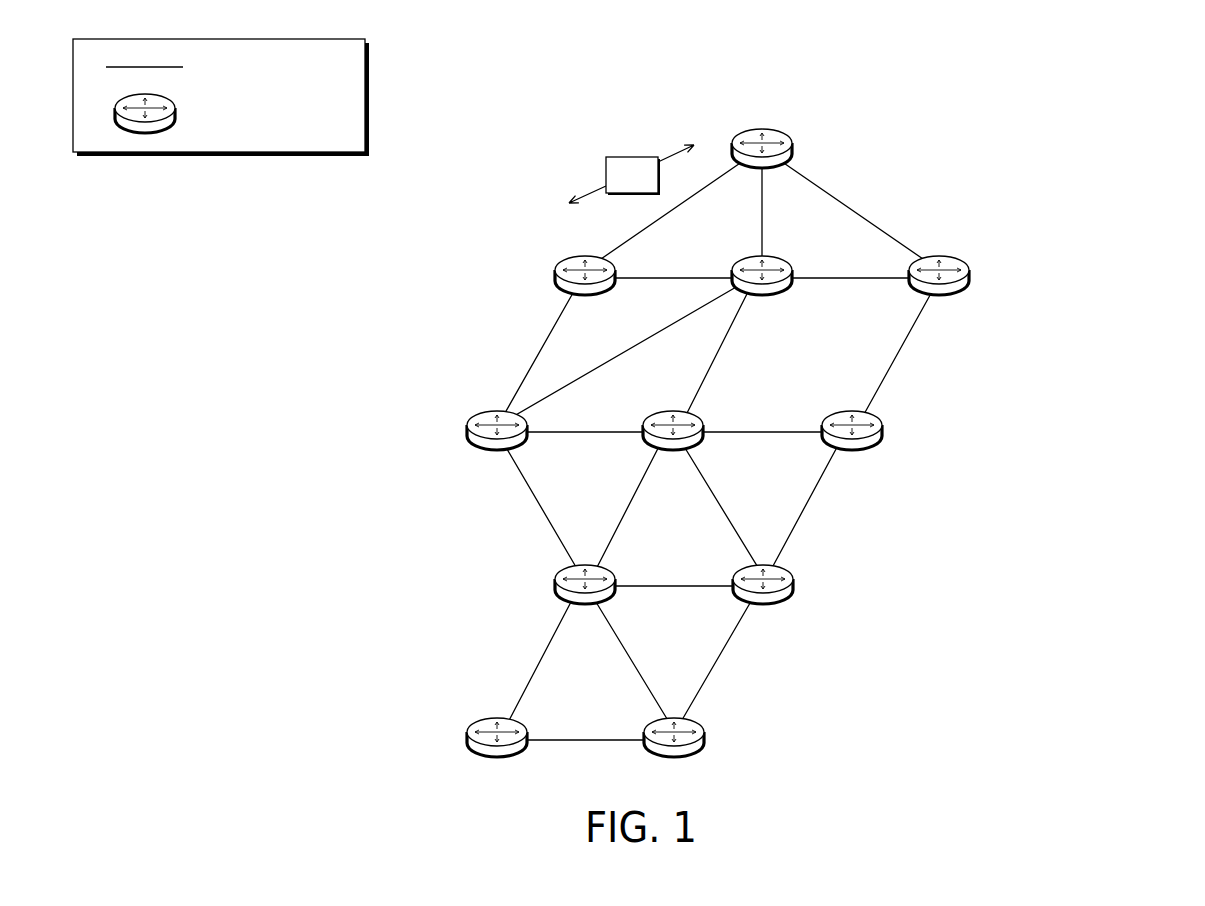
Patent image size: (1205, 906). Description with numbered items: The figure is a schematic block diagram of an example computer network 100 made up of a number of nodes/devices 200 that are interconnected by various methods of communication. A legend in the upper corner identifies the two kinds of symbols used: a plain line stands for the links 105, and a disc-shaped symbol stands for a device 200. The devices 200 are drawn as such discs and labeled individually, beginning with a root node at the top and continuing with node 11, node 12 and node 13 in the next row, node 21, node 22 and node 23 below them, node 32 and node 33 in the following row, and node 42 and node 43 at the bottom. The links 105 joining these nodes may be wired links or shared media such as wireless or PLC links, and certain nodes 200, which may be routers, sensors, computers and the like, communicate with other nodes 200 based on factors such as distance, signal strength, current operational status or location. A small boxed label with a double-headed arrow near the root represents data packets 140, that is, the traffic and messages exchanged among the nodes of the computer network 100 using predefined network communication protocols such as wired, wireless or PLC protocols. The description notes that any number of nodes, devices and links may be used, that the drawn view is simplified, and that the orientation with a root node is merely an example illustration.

The computer network 100 is at (1115, 89).
The links 105 is at (525, 397).
The nodes/devices 200 is at (224, 113).
The data packets 140 is at (631, 174).
The node 11 is at (585, 294).
The node 12 is at (762, 294).
The node 13 is at (939, 294).
The node 21 is at (497, 448).
The node 22 is at (673, 448).
The node 23 is at (852, 448).
The node 32 is at (585, 603).
The node 33 is at (763, 603).
The node 42 is at (497, 755).
The node 43 is at (674, 755).